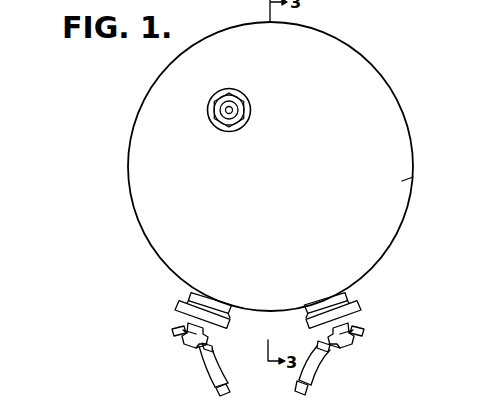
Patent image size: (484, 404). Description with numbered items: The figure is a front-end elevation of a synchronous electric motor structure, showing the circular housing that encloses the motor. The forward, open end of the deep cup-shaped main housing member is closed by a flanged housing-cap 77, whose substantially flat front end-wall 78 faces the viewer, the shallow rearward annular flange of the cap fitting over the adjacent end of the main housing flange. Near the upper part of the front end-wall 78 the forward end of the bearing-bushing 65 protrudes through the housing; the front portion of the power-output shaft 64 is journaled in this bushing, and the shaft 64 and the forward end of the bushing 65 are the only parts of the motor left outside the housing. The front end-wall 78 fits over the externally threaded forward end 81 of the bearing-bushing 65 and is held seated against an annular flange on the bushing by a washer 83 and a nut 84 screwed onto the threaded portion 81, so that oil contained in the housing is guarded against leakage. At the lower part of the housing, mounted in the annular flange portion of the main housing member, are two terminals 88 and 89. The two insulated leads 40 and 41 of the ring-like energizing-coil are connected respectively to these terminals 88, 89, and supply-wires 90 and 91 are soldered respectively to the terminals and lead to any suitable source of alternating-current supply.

The flanged housing-cap 77 is at (406, 212).
The front end-wall 78 is at (410, 180).
The washer 83 is at (243, 94).
The nut 84 is at (221, 128).
The externally threaded forward end 81 is at (246, 113).
The power-output shaft 64 is at (222, 112).
The bearing-bushing 65 is at (237, 125).
The terminal 88 is at (189, 294).
The terminal 89 is at (357, 305).
The insulated lead 41 is at (182, 334).
The insulated lead 40 is at (355, 341).
The supply-wire 90 is at (211, 374).
The supply-wire 91 is at (316, 373).